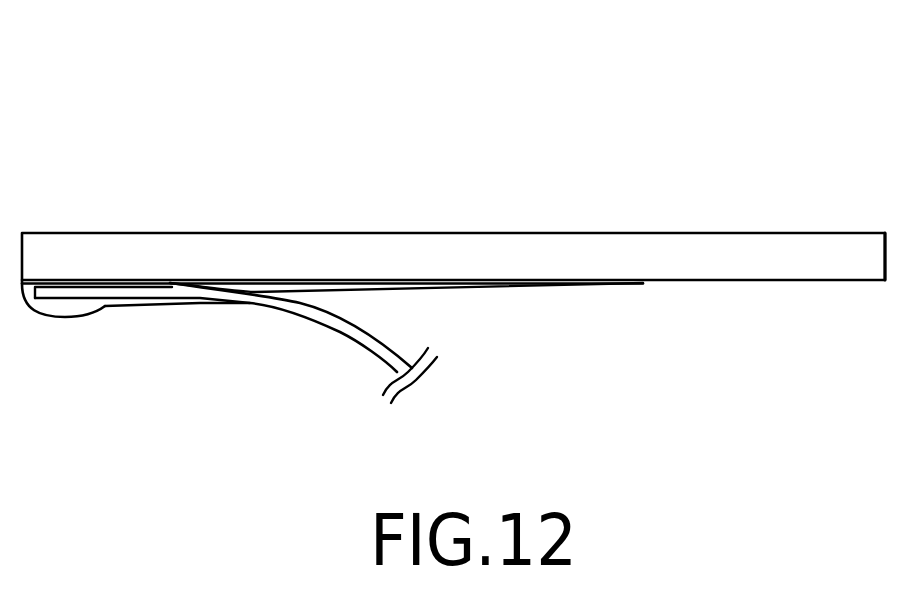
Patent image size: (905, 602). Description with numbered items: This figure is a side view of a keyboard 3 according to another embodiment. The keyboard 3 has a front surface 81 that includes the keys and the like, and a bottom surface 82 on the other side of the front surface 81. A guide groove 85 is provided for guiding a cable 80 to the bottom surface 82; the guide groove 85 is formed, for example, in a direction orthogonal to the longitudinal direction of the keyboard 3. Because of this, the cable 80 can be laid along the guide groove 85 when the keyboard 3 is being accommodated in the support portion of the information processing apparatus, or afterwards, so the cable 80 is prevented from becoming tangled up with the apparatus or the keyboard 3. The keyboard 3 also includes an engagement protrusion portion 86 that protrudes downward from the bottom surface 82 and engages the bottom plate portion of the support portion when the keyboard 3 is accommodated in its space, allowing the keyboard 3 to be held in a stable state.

The keyboard 3 is at (424, 132).
The front surface 81 is at (165, 233).
The bottom surface 82 is at (762, 281).
The guide groove 85 is at (248, 303).
The engagement protrusion portion 86 is at (72, 318).
The cable 80 is at (348, 332).